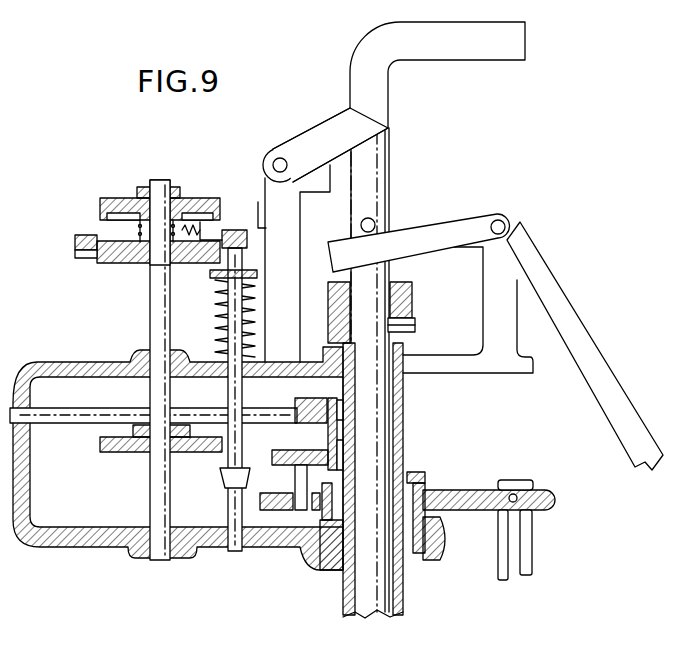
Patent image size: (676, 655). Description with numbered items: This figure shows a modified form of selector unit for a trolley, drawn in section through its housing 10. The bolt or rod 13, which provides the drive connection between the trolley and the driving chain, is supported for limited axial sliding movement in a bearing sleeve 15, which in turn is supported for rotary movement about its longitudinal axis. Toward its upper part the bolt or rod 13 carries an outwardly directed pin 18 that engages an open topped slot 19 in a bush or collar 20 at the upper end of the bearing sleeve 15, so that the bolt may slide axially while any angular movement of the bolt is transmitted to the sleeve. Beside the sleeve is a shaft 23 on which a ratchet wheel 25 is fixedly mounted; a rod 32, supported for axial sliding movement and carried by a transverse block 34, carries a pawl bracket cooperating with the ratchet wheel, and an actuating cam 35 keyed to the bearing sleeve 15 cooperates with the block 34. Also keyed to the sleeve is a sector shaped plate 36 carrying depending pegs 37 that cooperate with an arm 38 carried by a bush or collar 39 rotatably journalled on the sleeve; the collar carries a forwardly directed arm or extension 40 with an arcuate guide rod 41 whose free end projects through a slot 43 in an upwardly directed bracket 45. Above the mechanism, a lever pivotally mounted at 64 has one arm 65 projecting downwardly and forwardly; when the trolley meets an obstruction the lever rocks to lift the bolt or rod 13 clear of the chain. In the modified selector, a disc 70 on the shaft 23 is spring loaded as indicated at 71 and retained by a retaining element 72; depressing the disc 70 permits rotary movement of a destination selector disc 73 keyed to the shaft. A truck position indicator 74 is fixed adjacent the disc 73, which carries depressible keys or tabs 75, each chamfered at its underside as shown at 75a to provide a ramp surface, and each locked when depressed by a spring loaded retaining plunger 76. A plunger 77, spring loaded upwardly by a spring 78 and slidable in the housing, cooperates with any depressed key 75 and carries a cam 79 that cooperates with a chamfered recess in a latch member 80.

The housing 10 is at (60, 363).
The bolt or rod 13 is at (370, 275).
The bearing sleeve 15 is at (403, 391).
The pin 18 is at (415, 327).
The open topped slot 19 is at (410, 291).
The bush or collar 20 is at (328, 293).
The shaft 23 is at (152, 312).
The ratchet wheel 25 is at (105, 452).
The rod 32 is at (216, 406).
The transverse block 34 is at (295, 403).
The actuating cam 35 is at (328, 430).
The sector shaped plate 36 is at (272, 457).
The depending peg 37 is at (298, 479).
The arm 38 is at (300, 520).
The bush or collar 39 is at (425, 482).
The arm or extension 40 is at (478, 490).
The arcuate guide rod 41 is at (514, 494).
The slot 43 is at (498, 561).
The upwardly directed bracket 45 is at (532, 546).
The pivot 64 is at (507, 222).
The lever arm 65 is at (580, 357).
The disc 70 is at (188, 198).
The spring loading 71 is at (138, 228).
The retaining element 72 is at (140, 188).
The destination selector disc 73 is at (110, 264).
The truck position indicator 74 is at (250, 224).
The depressible key or tab 75 is at (75, 241).
The chamfer 75a is at (75, 255).
The spring loaded retaining plunger 76 is at (205, 232).
The plunger 77 is at (230, 307).
The spring 78 is at (215, 292).
The cam 79 is at (225, 480).
The latch member 80 is at (262, 512).